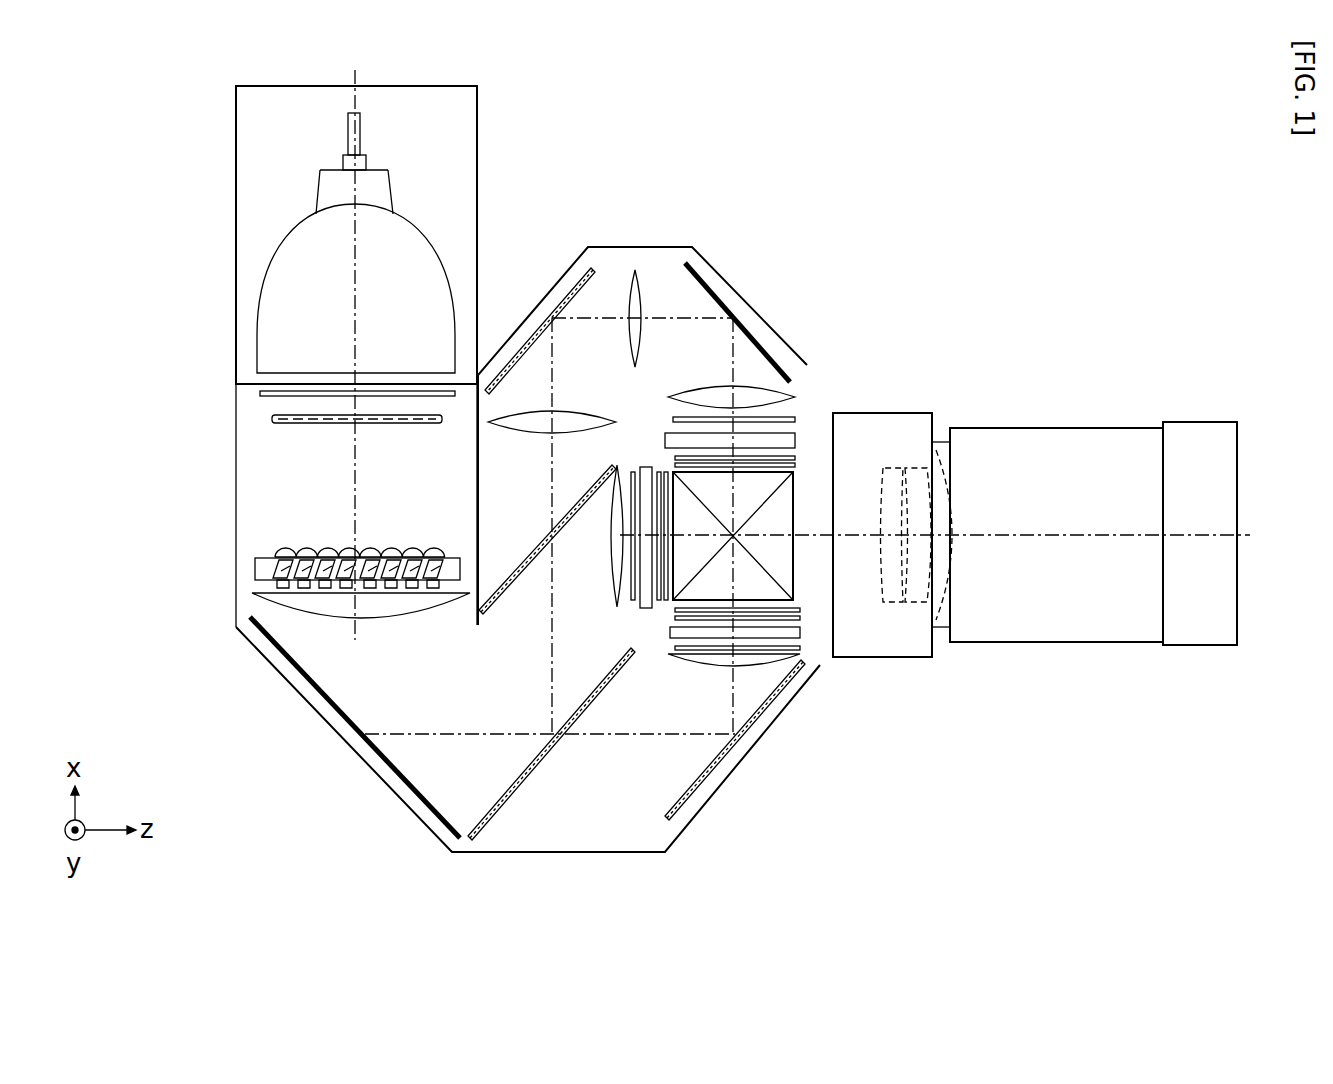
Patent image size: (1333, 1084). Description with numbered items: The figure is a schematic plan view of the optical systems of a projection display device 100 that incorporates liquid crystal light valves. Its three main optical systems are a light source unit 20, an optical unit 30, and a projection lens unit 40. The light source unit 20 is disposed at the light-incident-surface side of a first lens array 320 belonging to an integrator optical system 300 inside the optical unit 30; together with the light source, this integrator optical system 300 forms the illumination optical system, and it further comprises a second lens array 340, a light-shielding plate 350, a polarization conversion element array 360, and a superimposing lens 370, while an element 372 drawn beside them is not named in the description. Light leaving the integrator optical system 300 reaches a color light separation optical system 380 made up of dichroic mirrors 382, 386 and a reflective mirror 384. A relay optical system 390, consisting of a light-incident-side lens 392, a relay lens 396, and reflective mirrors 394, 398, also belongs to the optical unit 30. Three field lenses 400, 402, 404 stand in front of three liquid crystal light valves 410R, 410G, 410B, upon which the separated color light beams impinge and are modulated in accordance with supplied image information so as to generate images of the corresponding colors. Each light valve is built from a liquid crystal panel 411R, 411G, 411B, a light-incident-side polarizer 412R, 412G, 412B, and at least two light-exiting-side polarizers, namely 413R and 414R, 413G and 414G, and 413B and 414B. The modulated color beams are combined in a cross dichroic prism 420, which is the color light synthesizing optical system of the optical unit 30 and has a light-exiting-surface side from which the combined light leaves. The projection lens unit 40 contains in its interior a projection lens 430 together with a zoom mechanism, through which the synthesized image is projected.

The projection display device 100 is at (754, 244).
The light source unit 20 is at (200, 258).
The optical unit 30 is at (565, 897).
The projection lens unit 40 is at (1038, 428).
The integrator optical system 300 is at (190, 443).
The first lens array 320 is at (272, 418).
The second lens array 340 is at (285, 548).
The light-shielding plate 350 is at (268, 560).
The polarization conversion element array 360 is at (256, 572).
The superimposing lens 370 is at (252, 596).
The reflecting mirror 372 is at (296, 672).
The color light separation optical system 380 is at (500, 722).
The dichroic mirror 382 is at (552, 745).
The reflective mirror 384 is at (722, 770).
The dichroic mirror 386 is at (530, 565).
The relay optical system 390 is at (634, 248).
The light-incident-side lens 392 is at (510, 435).
The reflective mirror 394 is at (540, 335).
The relay lens 396 is at (645, 325).
The reflective mirror 398 is at (738, 298).
The field lens 400 is at (757, 670).
The field lens 402 is at (613, 540).
The field lens 404 is at (718, 397).
The liquid crystal light valve 410B is at (848, 367).
The liquid crystal light valve 410G is at (768, 709).
The liquid crystal light valve 410R is at (850, 719).
The liquid crystal panel 411B is at (795, 420).
The liquid crystal panel 411G is at (647, 603).
The liquid crystal panel 411R is at (800, 648).
The light-incident-side polarizer 412B is at (795, 397).
The light-incident-side polarizer 412G is at (632, 603).
The light-incident-side polarizer 412R is at (800, 660).
The light-exiting-side polarizer 413B is at (795, 440).
The light-exiting-side polarizer 413G is at (660, 603).
The light-exiting-side polarizer 413R is at (800, 632).
The light-exiting-side polarizer 414B is at (795, 462).
The light-exiting-side polarizer 414G is at (672, 603).
The light-exiting-side polarizer 414R is at (800, 612).
The cross dichroic prism 420 is at (793, 563).
The projection lens 430 is at (940, 448).